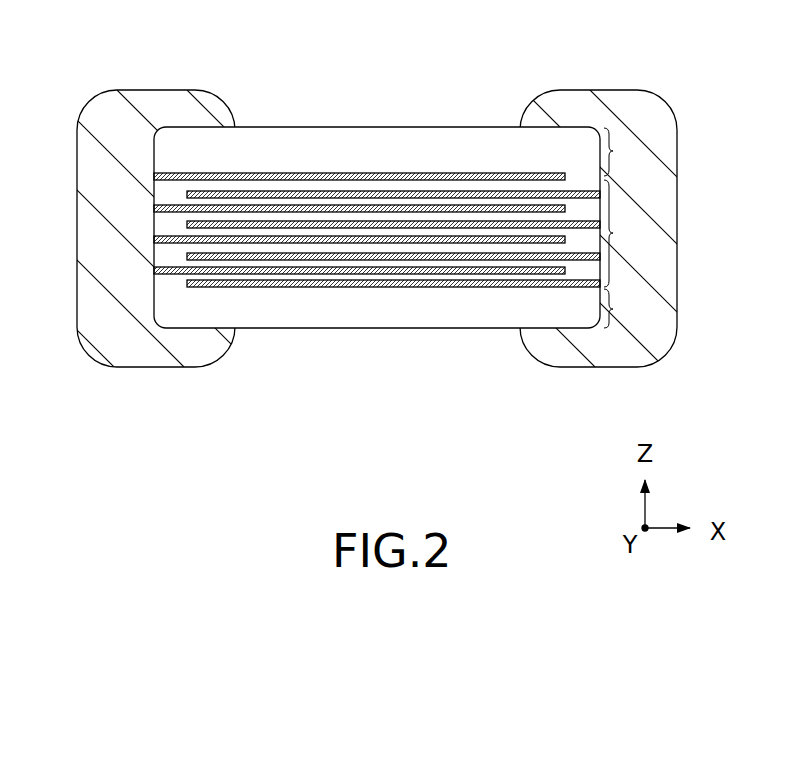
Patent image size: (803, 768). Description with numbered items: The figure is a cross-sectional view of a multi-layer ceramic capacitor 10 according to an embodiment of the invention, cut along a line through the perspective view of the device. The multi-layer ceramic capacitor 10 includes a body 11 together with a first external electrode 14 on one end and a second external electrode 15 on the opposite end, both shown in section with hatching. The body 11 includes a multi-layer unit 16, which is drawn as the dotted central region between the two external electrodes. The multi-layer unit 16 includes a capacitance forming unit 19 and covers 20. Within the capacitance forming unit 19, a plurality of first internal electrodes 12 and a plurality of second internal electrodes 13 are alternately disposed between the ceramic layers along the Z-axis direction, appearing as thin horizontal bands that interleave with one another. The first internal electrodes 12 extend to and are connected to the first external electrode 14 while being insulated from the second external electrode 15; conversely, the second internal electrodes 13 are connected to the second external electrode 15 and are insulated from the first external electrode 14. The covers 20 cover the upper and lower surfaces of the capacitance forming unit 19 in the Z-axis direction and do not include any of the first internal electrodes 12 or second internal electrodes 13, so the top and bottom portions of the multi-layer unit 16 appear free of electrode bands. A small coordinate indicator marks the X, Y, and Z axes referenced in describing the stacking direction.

The multi-layer ceramic capacitor 10 is at (401, 202).
The body 11 is at (401, 218).
The first internal electrodes 12 is at (257, 260).
The second internal electrodes 13 is at (447, 280).
The first external electrode 14 is at (92, 128).
The second external electrode 15 is at (677, 174).
The multi-layer unit 16 is at (353, 323).
The capacitance forming unit 19 is at (626, 233).
The covers 20 is at (626, 228).